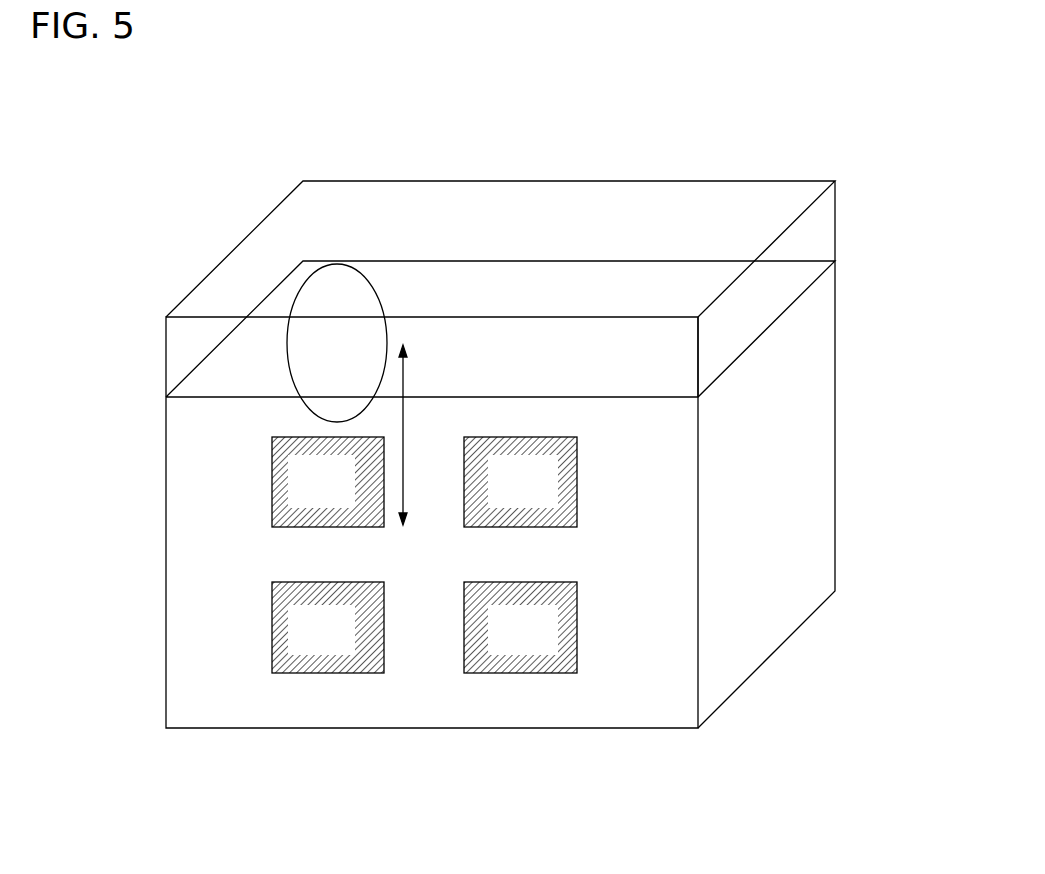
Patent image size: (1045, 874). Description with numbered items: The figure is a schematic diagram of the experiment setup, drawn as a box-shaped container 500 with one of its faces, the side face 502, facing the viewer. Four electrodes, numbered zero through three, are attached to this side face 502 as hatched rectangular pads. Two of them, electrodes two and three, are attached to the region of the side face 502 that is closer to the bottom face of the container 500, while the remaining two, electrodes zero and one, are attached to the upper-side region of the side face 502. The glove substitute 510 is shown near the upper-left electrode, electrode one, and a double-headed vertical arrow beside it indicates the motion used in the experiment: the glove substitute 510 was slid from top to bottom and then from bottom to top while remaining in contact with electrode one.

The container 500 is at (822, 232).
The side face 502 is at (200, 602).
The glove substitute 510 is at (358, 292).